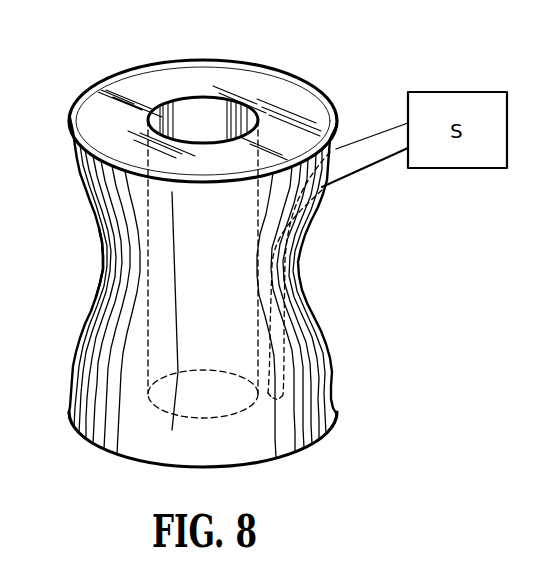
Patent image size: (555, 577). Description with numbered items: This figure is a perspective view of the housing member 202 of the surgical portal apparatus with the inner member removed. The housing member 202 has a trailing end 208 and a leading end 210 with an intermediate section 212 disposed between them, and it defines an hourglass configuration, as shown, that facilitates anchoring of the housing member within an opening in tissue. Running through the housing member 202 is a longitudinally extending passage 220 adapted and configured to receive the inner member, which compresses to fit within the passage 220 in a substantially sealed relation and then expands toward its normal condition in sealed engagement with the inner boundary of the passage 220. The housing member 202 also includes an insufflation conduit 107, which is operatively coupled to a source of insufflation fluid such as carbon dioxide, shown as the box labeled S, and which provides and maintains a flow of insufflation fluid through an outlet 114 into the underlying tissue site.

The housing member 202 is at (201, 255).
The longitudinally extending passage 220 is at (236, 110).
The trailing end 208 is at (92, 163).
The intermediate section 212 is at (104, 267).
The leading end 210 is at (85, 420).
The insufflation conduit 107 is at (280, 320).
The outlet 114 is at (266, 440).